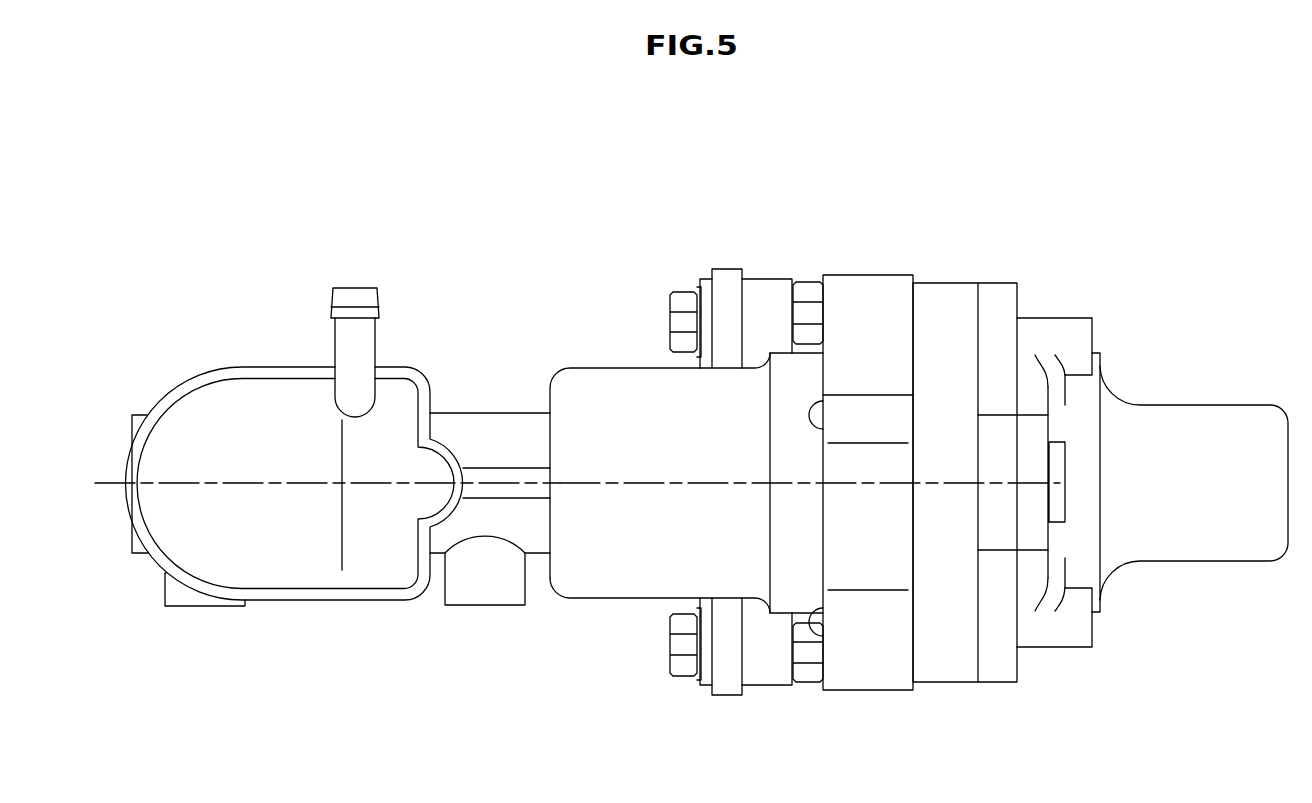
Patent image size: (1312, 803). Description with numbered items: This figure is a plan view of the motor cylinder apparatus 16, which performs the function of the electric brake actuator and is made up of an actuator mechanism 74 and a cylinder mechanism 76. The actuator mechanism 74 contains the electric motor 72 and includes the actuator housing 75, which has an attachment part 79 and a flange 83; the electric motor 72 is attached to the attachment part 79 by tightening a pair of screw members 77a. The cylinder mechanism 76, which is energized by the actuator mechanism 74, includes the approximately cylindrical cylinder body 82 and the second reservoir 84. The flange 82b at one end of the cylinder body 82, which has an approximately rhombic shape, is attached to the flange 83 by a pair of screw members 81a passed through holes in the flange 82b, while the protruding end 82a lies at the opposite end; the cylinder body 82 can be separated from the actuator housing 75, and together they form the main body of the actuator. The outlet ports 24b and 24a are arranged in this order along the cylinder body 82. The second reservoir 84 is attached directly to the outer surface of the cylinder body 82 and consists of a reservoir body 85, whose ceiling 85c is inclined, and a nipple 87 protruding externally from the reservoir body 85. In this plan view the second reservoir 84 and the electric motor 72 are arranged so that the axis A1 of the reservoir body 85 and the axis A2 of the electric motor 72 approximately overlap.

The motor cylinder apparatus 16 is at (1057, 197).
The electric motor 72 is at (593, 367).
The actuator mechanism 74 is at (974, 688).
The actuator housing 75 is at (1068, 352).
The cylinder mechanism 76 is at (385, 606).
The screw members 77a is at (787, 312).
The attachment part 79 is at (945, 655).
The screw members 81a is at (668, 322).
The cylinder body 82 is at (477, 412).
The one end of the cylinder body 82a is at (132, 535).
The flange 82b is at (725, 695).
The flange 83 is at (762, 687).
The second reservoir 84 is at (255, 363).
The reservoir body 85 is at (222, 450).
The ceiling 85c is at (238, 536).
The nipple 87 is at (360, 333).
The outlet port 24a is at (478, 606).
The outlet port 24b is at (197, 607).
The axis of the reservoir body A1 is at (103, 478).
The axis of the electric motor A2 is at (692, 478).